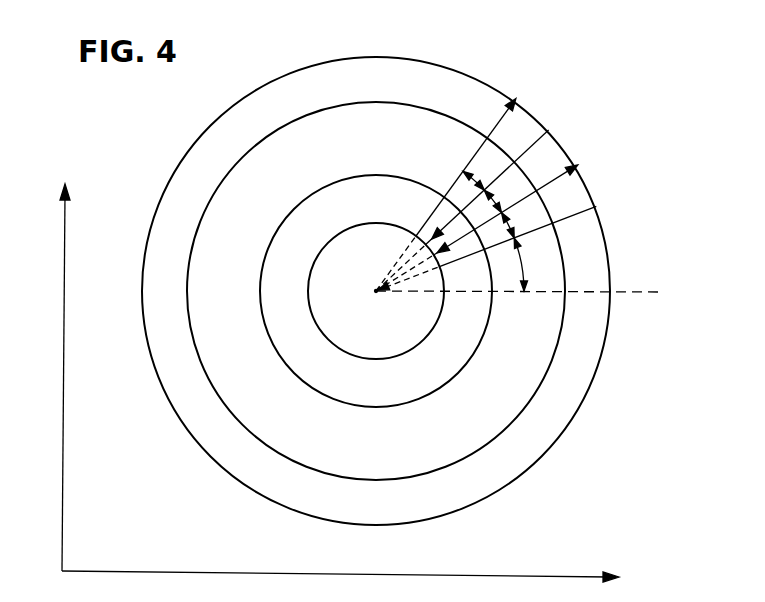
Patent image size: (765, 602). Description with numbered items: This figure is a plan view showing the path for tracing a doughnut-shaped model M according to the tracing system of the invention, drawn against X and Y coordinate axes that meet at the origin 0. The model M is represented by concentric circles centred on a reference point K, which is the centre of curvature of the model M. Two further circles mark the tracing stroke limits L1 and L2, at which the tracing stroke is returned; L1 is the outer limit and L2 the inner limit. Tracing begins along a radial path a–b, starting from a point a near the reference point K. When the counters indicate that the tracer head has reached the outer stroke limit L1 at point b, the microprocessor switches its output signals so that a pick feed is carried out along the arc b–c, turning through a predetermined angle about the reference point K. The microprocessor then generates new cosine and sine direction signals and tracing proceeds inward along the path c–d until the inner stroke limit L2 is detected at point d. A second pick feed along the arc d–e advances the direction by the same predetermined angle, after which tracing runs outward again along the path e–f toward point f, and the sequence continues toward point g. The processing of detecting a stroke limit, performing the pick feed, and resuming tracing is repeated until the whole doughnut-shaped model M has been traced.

The doughnut-shaped model M is at (316, 123).
The tracing stroke limit L1 is at (598, 368).
The tracing stroke limit L2 is at (433, 328).
The reference point K is at (508, 314).
The path point a is at (381, 296).
The path point b is at (596, 207).
The path point c is at (578, 164).
The path point d is at (441, 250).
The path point e is at (436, 236).
The path point f is at (549, 130).
The measurement direction g is at (516, 99).
The X axis X is at (340, 586).
The Y axis Y is at (54, 377).
The origin 0 is at (48, 573).